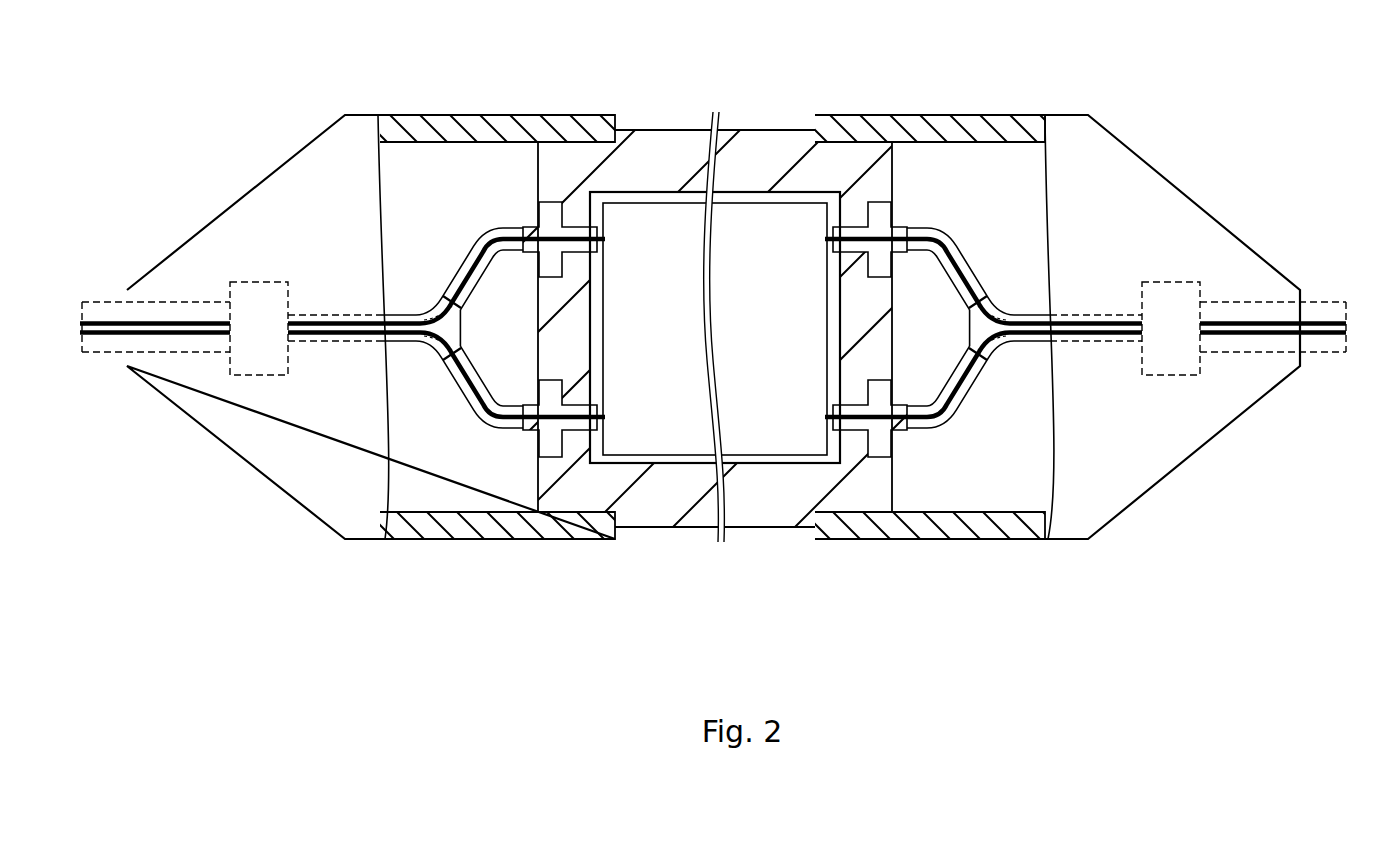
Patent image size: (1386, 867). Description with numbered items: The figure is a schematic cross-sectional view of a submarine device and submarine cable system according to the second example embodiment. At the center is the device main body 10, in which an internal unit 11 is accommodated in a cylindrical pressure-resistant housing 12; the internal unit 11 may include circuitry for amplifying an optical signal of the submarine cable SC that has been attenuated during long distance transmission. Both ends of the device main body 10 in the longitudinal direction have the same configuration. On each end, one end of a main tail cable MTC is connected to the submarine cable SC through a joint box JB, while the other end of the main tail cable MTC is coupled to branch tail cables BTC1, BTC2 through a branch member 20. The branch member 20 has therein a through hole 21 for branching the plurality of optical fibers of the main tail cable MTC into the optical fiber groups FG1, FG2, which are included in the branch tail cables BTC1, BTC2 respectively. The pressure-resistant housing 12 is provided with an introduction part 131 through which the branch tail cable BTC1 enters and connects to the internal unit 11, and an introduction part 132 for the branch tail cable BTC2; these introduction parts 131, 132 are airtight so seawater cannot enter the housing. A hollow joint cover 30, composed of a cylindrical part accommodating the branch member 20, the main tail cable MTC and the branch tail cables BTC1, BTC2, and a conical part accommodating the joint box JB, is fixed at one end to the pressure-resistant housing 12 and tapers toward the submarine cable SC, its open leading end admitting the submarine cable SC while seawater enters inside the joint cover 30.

The device main body 10 is at (691, 106).
The internal unit 11 is at (762, 205).
The pressure-resistant housing 12 is at (737, 130).
The branch member 20 is at (432, 302).
The through hole 21 is at (432, 352).
The joint cover 30 is at (912, 118).
The introduction part 131 is at (533, 254).
The introduction part 132 is at (533, 404).
The optical fiber group FG1 is at (510, 236).
The optical fiber group FG2 is at (505, 422).
The branch tail cable BTC1 is at (468, 246).
The branch tail cable BTC2 is at (466, 417).
The main tail cable MTC is at (315, 315).
The joint box JB is at (255, 282).
The submarine cable SC is at (103, 300).